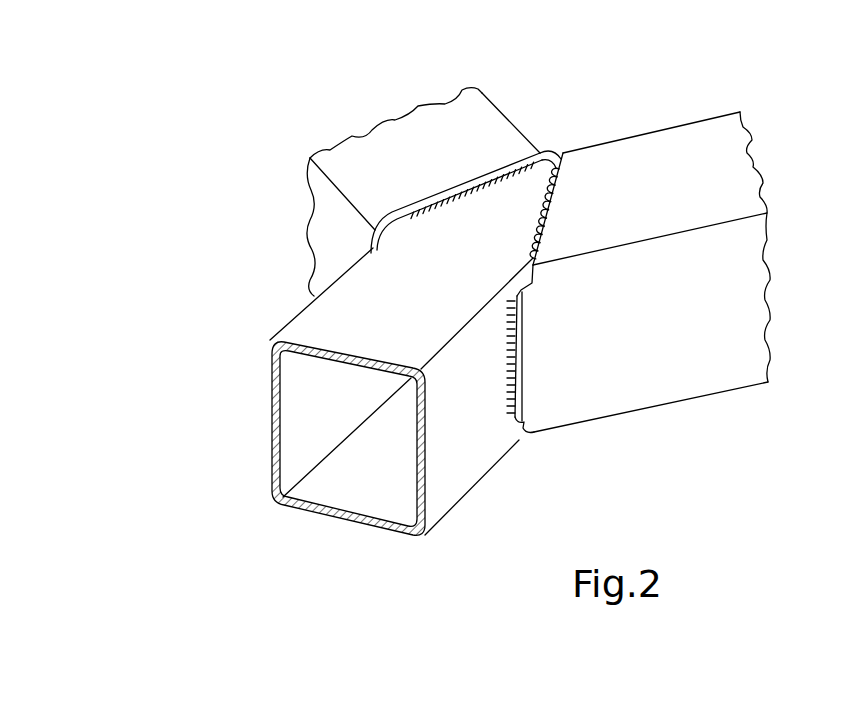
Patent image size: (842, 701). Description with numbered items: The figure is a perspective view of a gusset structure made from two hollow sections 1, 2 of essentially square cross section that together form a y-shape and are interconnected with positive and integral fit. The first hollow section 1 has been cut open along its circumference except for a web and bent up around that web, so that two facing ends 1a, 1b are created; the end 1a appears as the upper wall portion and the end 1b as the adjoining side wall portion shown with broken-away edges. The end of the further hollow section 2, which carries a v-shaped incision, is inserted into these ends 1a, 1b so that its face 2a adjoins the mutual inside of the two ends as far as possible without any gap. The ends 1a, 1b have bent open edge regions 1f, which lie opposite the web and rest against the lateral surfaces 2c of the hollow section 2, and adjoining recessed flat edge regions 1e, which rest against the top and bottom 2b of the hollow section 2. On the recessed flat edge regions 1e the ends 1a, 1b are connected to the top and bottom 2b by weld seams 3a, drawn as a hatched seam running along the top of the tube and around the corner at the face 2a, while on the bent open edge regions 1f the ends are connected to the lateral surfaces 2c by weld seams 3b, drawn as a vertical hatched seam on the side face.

The first hollow section 1 is at (720, 437).
The end of the first hollow section 1a is at (468, 133).
The end of the first hollow section 1b is at (693, 150).
The recessed flat edge region 1e is at (532, 240).
The bent open edge region 1f is at (523, 440).
The further hollow section 2 is at (342, 548).
The face of the hollow section 2a is at (545, 158).
The top and bottom of the hollow section 2b is at (325, 328).
The lateral surface of the hollow section 2c is at (450, 467).
The weld seam 3a is at (463, 180).
The weld seam 3b is at (523, 333).